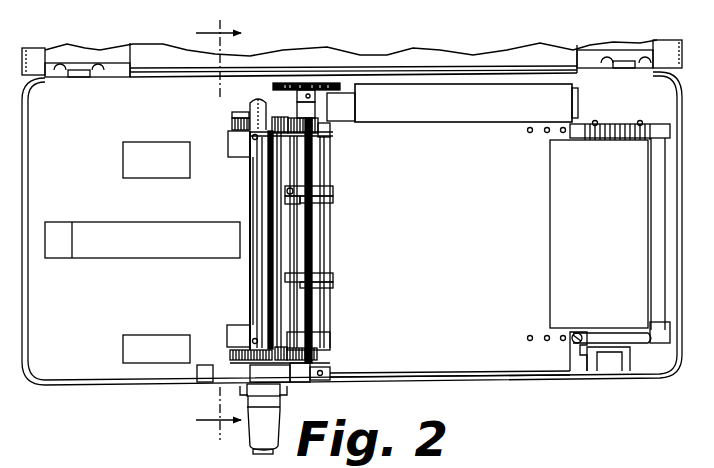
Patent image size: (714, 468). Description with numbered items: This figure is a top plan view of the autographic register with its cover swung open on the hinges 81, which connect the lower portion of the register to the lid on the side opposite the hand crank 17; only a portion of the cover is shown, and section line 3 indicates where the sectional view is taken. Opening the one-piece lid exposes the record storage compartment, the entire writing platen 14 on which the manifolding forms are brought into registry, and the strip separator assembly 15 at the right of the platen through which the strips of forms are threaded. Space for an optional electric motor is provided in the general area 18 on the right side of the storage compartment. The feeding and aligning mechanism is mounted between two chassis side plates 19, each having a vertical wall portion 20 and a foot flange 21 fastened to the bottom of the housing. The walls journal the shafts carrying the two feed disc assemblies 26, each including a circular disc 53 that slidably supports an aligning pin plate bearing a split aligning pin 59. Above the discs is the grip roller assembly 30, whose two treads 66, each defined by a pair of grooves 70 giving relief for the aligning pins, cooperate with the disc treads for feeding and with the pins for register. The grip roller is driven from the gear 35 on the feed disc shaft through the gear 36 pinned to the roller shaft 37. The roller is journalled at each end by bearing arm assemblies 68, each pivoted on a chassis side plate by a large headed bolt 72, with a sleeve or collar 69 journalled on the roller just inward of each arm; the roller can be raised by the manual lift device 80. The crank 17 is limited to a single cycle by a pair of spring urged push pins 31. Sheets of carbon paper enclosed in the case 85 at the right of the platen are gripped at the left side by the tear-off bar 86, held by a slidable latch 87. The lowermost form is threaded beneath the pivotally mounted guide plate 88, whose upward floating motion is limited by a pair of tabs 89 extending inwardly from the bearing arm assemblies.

The section line 3- 3 is at (211, 232).
The writing platen 14 is at (462, 312).
The separator assembly 15 is at (623, 121).
The hand crank 17 is at (266, 429).
The motor space area 18 is at (146, 107).
The chassis side plates 19 is at (232, 150).
The vertical wall portion 20 is at (230, 137).
The foot flange 21 is at (249, 158).
The feed disc assemblies 26 is at (331, 199).
The grip roller assembly 30 is at (314, 232).
The spring urged push pins 31 is at (241, 390).
The gear 35 is at (272, 87).
The gear 36 is at (308, 84).
The shaft 37 is at (301, 107).
The circular disc 53 is at (287, 190).
The split aligning pin 59 is at (290, 206).
The treads 66 is at (326, 186).
The bearing arm assemblies 68 is at (232, 123).
The sleeve or collar 69 is at (320, 142).
The grooves 70 is at (308, 172).
The large headed bolt 72 is at (236, 115).
The manual lift device 80 is at (251, 106).
The hinges 81 is at (71, 78).
The carbon paper case 85 is at (467, 112).
The tear-off bar 86 is at (538, 378).
The slidable latch 87 is at (621, 372).
The guide plate 88 is at (268, 208).
The tabs 89 is at (262, 165).